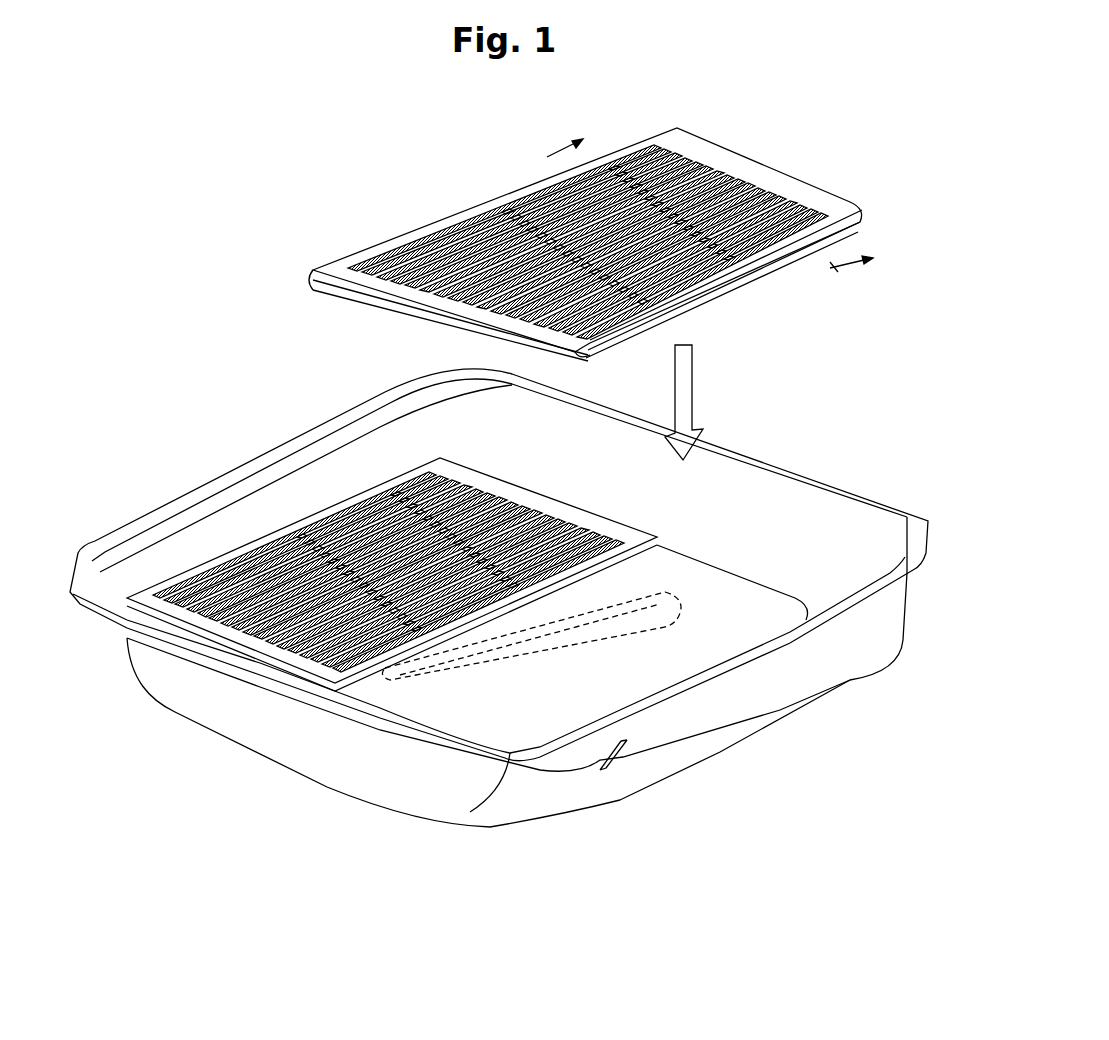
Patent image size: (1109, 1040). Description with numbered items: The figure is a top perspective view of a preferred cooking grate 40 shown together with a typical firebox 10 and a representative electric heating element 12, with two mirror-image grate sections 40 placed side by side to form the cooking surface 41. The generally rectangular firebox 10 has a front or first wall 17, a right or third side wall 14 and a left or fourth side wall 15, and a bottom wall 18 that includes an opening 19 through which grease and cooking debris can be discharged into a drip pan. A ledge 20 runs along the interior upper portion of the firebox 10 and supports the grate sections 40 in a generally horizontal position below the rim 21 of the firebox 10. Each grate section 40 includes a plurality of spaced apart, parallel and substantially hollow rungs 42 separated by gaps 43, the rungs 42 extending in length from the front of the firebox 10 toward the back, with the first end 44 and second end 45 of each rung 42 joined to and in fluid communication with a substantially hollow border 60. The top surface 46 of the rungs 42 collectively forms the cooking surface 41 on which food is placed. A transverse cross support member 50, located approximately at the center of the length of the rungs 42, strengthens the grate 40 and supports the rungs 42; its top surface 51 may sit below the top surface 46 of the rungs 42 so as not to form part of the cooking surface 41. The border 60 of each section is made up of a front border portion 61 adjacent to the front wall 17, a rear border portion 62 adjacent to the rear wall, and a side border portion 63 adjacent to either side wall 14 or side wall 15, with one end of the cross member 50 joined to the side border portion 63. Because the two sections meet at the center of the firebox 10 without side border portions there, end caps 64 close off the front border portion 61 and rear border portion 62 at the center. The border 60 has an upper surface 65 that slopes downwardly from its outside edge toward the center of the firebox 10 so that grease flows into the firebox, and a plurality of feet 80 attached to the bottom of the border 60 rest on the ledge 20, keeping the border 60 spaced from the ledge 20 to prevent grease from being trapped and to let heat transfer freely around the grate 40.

The firebox 10 is at (528, 617).
The electric heating element 12 is at (530, 687).
The third side wall 14 is at (715, 713).
The fourth side wall 15 is at (157, 527).
The first wall 17 is at (343, 773).
The bottom wall 18 is at (867, 527).
The opening 19 is at (510, 737).
The ledge 20 is at (795, 600).
The rim 21 is at (203, 477).
The cooking grate 40 is at (494, 381).
The cooking surface 41 is at (623, 160).
The rungs 42 is at (433, 460).
The gap 43 is at (357, 255).
The first end 44 is at (200, 618).
The second end 45 is at (533, 497).
The top surface 46 is at (457, 223).
The cross support member 50 is at (583, 170).
The top surface 51 is at (743, 173).
The border 60 is at (853, 210).
The front border portion 61 is at (330, 290).
The rear border portion 62 is at (787, 177).
The side border portion 63 is at (735, 308).
The end caps 64 is at (660, 545).
The upper surface 65 is at (165, 600).
The feet 80 is at (573, 355).